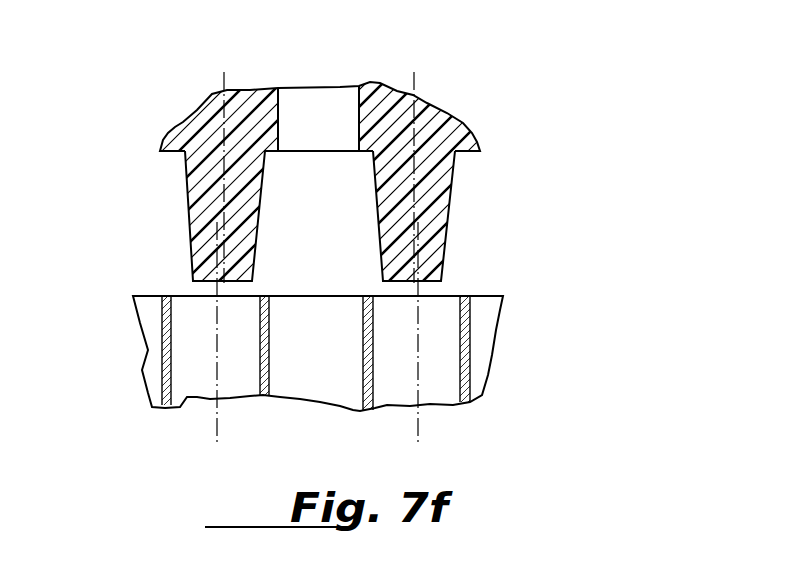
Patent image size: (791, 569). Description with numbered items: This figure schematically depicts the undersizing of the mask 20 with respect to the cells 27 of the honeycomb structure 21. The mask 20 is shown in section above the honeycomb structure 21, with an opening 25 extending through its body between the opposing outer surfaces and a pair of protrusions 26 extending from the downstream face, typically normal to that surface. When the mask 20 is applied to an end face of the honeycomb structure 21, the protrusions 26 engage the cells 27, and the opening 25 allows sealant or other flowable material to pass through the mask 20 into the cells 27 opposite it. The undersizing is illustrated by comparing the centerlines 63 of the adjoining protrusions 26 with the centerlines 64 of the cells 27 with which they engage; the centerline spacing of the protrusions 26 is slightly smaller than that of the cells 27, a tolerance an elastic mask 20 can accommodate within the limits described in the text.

The mask 20 is at (460, 112).
The honeycomb structure 21 is at (157, 352).
The openings 25 is at (312, 115).
The protrusions 26 is at (440, 208).
The cells 27 is at (442, 355).
The centerlines of adjoining protrusions 63 is at (413, 78).
The centerlines of the cells 64 is at (413, 425).